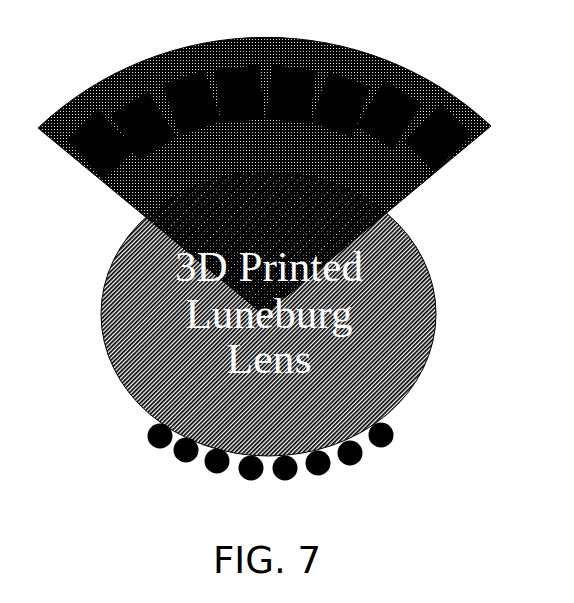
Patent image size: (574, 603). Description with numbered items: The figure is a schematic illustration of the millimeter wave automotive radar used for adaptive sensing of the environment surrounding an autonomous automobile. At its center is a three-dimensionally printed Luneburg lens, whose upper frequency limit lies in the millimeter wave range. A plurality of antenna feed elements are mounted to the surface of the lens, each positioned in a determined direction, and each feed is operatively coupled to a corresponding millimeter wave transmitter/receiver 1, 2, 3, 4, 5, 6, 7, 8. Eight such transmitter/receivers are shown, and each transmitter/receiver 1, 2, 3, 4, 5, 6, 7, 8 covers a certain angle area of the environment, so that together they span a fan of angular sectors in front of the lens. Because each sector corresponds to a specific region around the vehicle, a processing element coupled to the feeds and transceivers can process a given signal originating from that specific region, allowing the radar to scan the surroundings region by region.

The transmitter/receiver 1 is at (302, 290).
The transmitter/receiver 2 is at (296, 288).
The transmitter/receiver 3 is at (286, 288).
The transmitter/receiver 4 is at (278, 287).
The transmitter/receiver 5 is at (256, 288).
The transmitter/receiver 6 is at (251, 289).
The transmitter/receiver 7 is at (242, 293).
The transmitter/receiver 8 is at (234, 294).